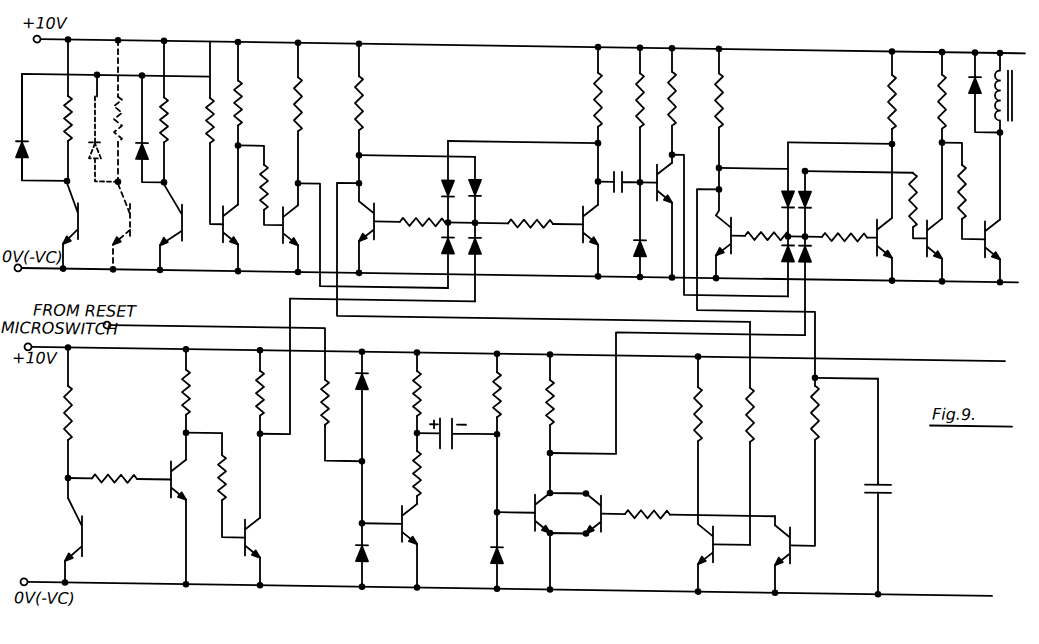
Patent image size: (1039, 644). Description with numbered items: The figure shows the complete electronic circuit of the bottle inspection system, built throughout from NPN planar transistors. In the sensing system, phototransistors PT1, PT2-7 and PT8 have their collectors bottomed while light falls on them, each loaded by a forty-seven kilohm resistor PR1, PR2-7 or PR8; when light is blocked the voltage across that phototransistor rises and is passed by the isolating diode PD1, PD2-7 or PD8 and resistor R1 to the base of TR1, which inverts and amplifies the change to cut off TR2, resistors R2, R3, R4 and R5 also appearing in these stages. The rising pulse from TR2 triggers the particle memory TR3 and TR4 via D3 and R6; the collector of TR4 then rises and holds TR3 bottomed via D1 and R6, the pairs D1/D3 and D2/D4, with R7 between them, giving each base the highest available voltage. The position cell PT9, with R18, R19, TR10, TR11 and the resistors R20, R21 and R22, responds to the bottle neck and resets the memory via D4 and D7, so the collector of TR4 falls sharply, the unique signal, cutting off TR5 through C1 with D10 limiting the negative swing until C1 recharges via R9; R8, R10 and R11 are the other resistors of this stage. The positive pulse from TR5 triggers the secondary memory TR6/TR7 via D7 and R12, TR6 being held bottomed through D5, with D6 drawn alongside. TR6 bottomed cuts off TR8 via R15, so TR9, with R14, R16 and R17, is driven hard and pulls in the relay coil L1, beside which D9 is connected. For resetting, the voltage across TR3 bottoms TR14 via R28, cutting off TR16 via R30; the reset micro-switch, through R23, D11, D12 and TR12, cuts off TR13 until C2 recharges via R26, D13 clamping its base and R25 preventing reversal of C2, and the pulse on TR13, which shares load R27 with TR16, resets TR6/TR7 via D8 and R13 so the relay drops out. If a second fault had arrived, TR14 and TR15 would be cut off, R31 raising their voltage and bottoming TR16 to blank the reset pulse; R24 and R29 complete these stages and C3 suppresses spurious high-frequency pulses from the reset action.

The load resistor PR1 is at (50, 110).
The load resistors PR2-7 is at (124, 122).
The load resistor PR8 is at (148, 111).
The isolating diode PD1 is at (41, 127).
The isolating diodes PD2-7 is at (88, 170).
The isolating diode PD8 is at (146, 136).
The phototransistor PT1 is at (59, 226).
The phototransistors PT2-7 is at (109, 226).
The phototransistor PT8 is at (161, 227).
The phototransistor PT9 is at (70, 540).
The resistor R1 is at (197, 132).
The resistor 47K R2 is at (258, 94).
The resistor 4.7K R3 is at (250, 173).
The resistor 4.7K R4 is at (279, 112).
The resistor 4.7K R5 is at (338, 122).
The resistor R6 is at (424, 219).
The resistor 10K R7 is at (529, 222).
The resistor 4.7K R8 is at (578, 114).
The resistor R9 is at (625, 143).
The resistor 4.7K R10 is at (692, 105).
The resistor 4.7K R11 is at (743, 132).
The resistor R12 is at (760, 238).
The resistor R13 is at (833, 235).
The resistor 4.7K R14 is at (874, 134).
The resistor R15 is at (919, 188).
The resistor 1K R16 is at (926, 135).
The resistor 1K R17 is at (972, 191).
The resistor 10K R18 is at (54, 422).
The resistor 4.7K R19 is at (119, 477).
The resistor 4.7K R20 is at (169, 391).
The resistor 4.7K R21 is at (216, 485).
The resistor 4.7K R22 is at (245, 392).
The resistor 10K R23 is at (311, 402).
The resistor 4.7K R24 is at (400, 392).
The resistor R25 is at (401, 465).
The resistor R26 is at (485, 450).
The common load resistor R27 is at (535, 403).
The resistor R28 is at (735, 433).
The resistor 47K R29 is at (799, 409).
The resistor R30 is at (648, 511).
The resistor R31 is at (682, 440).
The inverter and first-stage amplifier transistor TR1 is at (212, 208).
The second-stage transistor TR2 is at (272, 227).
The particle memory transistor TR3 is at (375, 237).
The particle memory transistor TR4 is at (580, 228).
The pulse transistor TR5 is at (657, 219).
The secondary memory transistor TR6 is at (734, 246).
The secondary memory transistor TR7 is at (875, 251).
The output relay amplifier transistor TR8 is at (922, 252).
The output relay amplifier transistor TR9 is at (979, 253).
The transistor TR10 is at (168, 508).
The transistor TR11 is at (235, 509).
The reset transistor TR12 is at (389, 541).
The reset pulse transistor TR13 is at (541, 521).
The transistor TR14 is at (724, 558).
The transistor TR15 is at (799, 516).
The blanking transistor TR16 is at (611, 525).
The diode D1 is at (434, 182).
The diode D2 is at (488, 190).
The diode D3 is at (434, 255).
The diode D4 is at (487, 262).
The diode D5 is at (776, 189).
The diode D6 is at (819, 204).
The diode D7 is at (777, 266).
The diode D8 is at (816, 286).
The coil clamp diode D9 is at (975, 92).
The diode D10 is at (624, 258).
The protective diode D11 is at (355, 448).
The protective diode D12 is at (343, 566).
The diode D13 is at (482, 568).
The capacitor C1 is at (619, 195).
The electrolytic capacitor C2 is at (457, 449).
The capacitor C3 is at (890, 487).
The 500 ohm coil L1 is at (1017, 136).